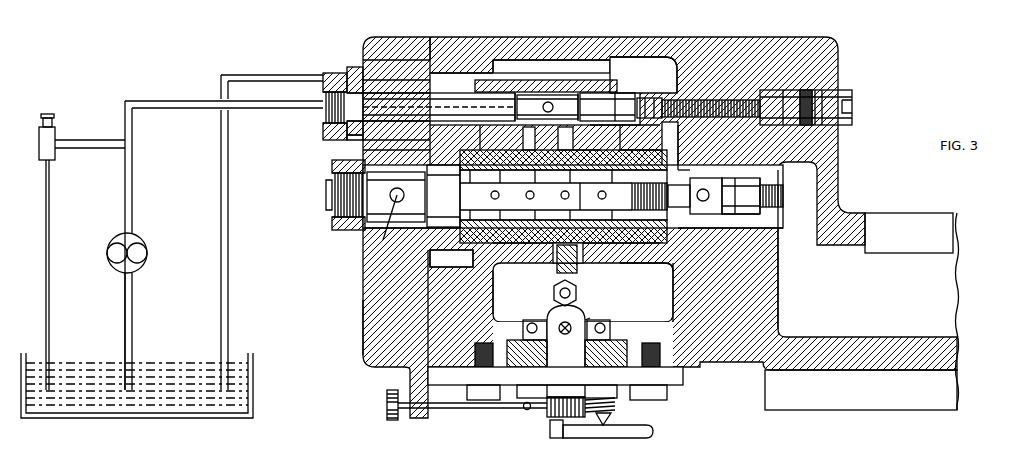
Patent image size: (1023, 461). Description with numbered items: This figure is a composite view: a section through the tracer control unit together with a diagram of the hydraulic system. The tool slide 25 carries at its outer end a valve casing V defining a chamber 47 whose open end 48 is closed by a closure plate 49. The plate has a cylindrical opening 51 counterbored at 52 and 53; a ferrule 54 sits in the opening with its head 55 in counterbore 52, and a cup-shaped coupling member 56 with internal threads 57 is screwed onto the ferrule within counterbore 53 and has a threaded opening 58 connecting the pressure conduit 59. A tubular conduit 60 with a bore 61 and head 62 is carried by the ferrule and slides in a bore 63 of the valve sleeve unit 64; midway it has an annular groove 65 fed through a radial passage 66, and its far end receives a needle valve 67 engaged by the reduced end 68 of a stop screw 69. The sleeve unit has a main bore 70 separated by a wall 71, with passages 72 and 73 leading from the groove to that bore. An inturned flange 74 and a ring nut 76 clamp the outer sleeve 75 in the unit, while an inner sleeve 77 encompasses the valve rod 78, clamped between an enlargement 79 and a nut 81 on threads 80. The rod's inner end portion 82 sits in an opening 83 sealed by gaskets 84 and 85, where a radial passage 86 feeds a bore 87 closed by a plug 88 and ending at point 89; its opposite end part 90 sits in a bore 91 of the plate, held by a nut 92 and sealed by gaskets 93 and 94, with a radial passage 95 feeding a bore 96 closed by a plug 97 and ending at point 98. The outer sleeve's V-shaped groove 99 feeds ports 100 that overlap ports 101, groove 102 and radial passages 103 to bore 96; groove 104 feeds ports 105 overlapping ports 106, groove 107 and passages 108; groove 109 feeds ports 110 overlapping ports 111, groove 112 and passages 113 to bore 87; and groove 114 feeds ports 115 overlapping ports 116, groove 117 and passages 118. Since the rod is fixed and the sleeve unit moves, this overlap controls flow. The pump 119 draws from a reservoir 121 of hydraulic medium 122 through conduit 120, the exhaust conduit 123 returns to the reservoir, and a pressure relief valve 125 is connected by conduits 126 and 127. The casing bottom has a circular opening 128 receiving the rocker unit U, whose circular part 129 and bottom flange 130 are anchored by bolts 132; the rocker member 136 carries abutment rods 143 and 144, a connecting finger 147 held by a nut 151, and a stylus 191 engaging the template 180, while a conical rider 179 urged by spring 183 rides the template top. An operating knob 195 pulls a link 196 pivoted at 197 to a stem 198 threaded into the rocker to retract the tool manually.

The tool slide 25 is at (957, 393).
The chamber 47 is at (668, 300).
The open end 48 is at (455, 55).
The closure plate 49 is at (363, 322).
The cylindrical opening 51 is at (400, 75).
The counterbore 52 is at (428, 60).
The counterbore 53 is at (375, 40).
The ferrule 54 is at (452, 70).
The head 55 is at (408, 140).
The cup-shaped coupling member 56 is at (355, 70).
The internal threads 57 is at (346, 138).
The threaded opening 58 is at (323, 115).
The conduit 59 is at (185, 109).
The tubular conduit 60 is at (493, 58).
The bore 61 is at (505, 82).
The head 62 is at (330, 73).
The bore 63 is at (615, 62).
The valve sleeve unit 64 is at (640, 268).
The annular groove 65 is at (578, 95).
The radial passage 66 is at (548, 100).
The needle valve 67 is at (650, 97).
The reduced end 68 is at (678, 100).
The stop screw 69 is at (852, 93).
The main bore 70 is at (445, 277).
The wall 71 is at (470, 98).
The passage 72 is at (490, 126).
The passage 73 is at (600, 100).
The inturned flange 74 is at (425, 123).
The outer sleeve 75 is at (467, 268).
The ring nut 76 is at (668, 255).
The inner sleeve 77 is at (440, 188).
The valve rod 78 is at (630, 135).
The enlargement 79 is at (447, 140).
The threads 80 is at (680, 160).
The nut 81 is at (678, 135).
The inner end portion 82 is at (770, 176).
The opening 83 is at (755, 218).
The gasket 84 is at (690, 220).
The gasket 85 is at (725, 224).
The radial passage 86 is at (705, 184).
The bore 87 is at (745, 178).
The plug 88 is at (783, 205).
The point 89 is at (571, 196).
The end part 90 is at (395, 256).
The bore 91 is at (395, 140).
The nut 92 is at (334, 226).
The gasket 93 is at (360, 238).
The gasket 94 is at (400, 236).
The radial passage 95 is at (380, 240).
The bore 96 is at (445, 240).
The plug 97 is at (332, 195).
The point 98 is at (500, 196).
The V-shaped groove 99 is at (540, 240).
The ports 100 is at (557, 140).
The ports 101 is at (545, 183).
The V-shaped groove 102 is at (510, 183).
The radial passages 103 is at (510, 208).
The V-shaped groove 104 is at (510, 240).
The ports 105 is at (522, 140).
The ports 106 is at (480, 138).
The V-shaped groove 107 is at (476, 183).
The radial passages 108 is at (476, 208).
The annular V-shaped groove 109 is at (608, 107).
The ports 110 is at (583, 255).
The ports 111 is at (545, 208).
The groove 112 is at (582, 183).
The radial passages 113 is at (583, 208).
The annular groove 114 is at (615, 240).
The ports 115 is at (600, 126).
The ports 116 is at (582, 148).
The V-shaped groove 117 is at (625, 185).
The radial passages 118 is at (625, 208).
The pump 119 is at (140, 240).
The conduit 120 is at (132, 330).
The reservoir 121 is at (190, 418).
The hydraulic medium 122 is at (90, 410).
The exhaust conduit 123 is at (228, 290).
The pressure relief valve 125 is at (52, 130).
The conduit 126 is at (49, 305).
The conduit 127 is at (100, 149).
The circular opening 128 is at (496, 320).
The circular part 129 is at (610, 360).
The bottom flange 130 is at (683, 382).
The anchoring bolts 132 is at (660, 350).
The rocker member 136 is at (540, 363).
The abutment rod 143 is at (532, 320).
The abutment rod 144 is at (602, 320).
The connecting finger 147 is at (557, 262).
The nut 151 is at (580, 304).
The conically shaped rider 179 is at (608, 425).
The template 180 is at (655, 432).
The expansion coil spring 183 is at (617, 406).
The stylus 191 is at (560, 440).
The operating knob 195 is at (387, 405).
The link 196 is at (462, 410).
The pivotal connection 197 is at (524, 410).
The stem 198 is at (545, 413).
The rocker unit U is at (594, 302).
The valve casing V is at (778, 300).